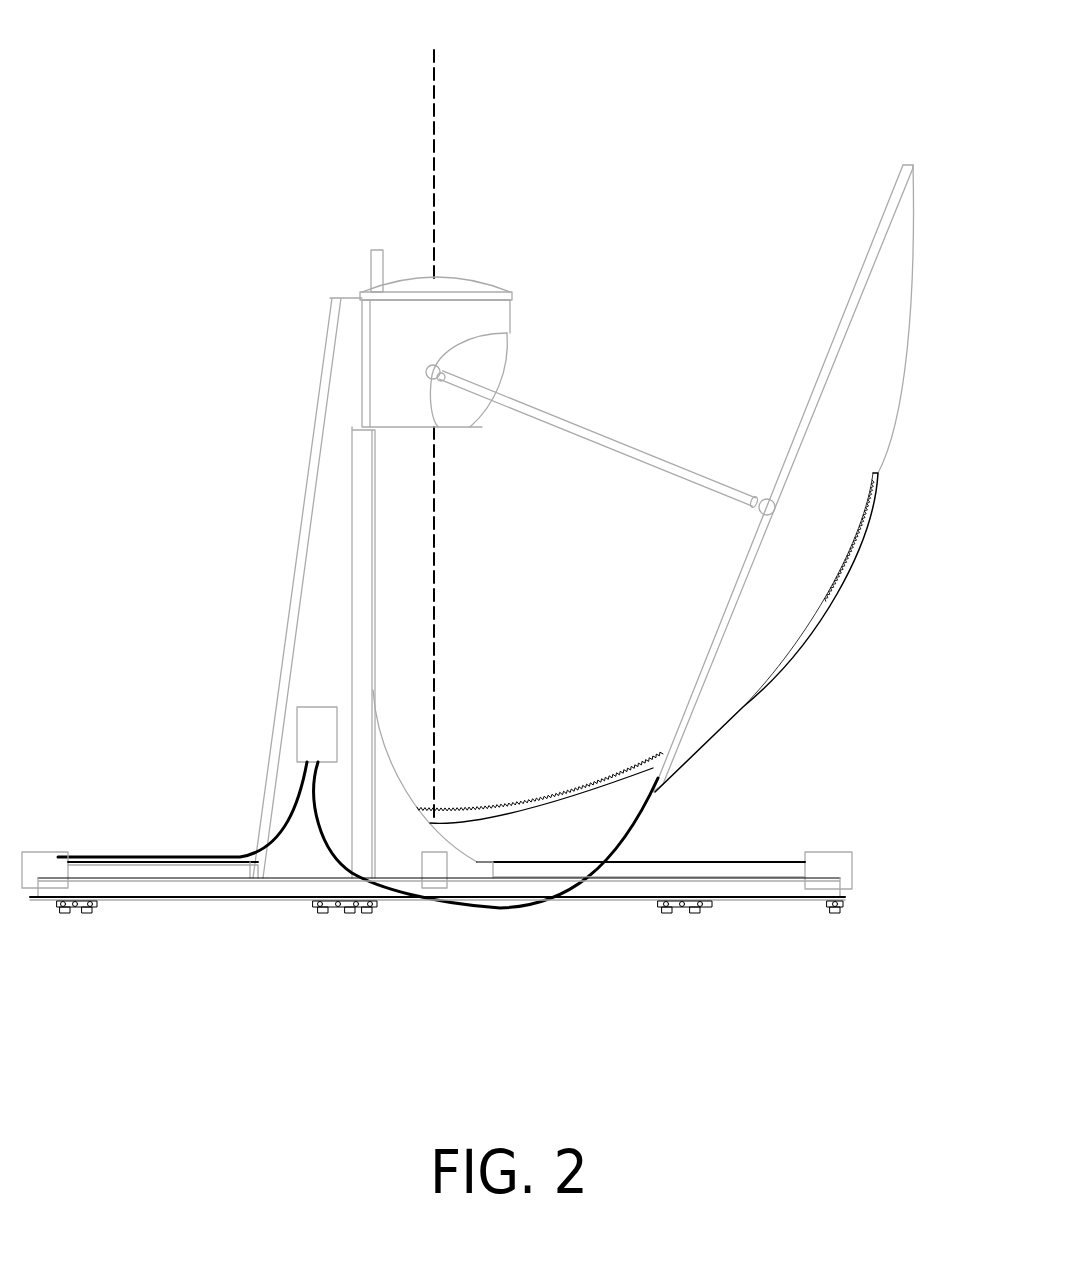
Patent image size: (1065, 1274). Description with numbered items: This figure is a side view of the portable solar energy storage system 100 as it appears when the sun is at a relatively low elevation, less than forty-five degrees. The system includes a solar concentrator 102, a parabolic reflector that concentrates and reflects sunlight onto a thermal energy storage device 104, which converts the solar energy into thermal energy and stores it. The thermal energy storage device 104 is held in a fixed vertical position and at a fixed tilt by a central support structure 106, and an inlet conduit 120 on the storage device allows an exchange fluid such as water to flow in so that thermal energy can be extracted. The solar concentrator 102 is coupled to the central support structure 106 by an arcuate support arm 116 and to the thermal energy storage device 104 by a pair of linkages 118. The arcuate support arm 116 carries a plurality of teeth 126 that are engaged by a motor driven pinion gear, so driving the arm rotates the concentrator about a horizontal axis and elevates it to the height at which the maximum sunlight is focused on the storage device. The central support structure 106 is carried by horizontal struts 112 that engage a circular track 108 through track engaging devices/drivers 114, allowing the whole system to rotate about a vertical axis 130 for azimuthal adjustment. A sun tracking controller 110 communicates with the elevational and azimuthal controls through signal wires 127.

The portable solar energy storage system 100 is at (143, 95).
The solar concentrator 102 is at (726, 712).
The thermal energy storage device 104 is at (484, 290).
The central support structure 106 is at (308, 583).
The circular track 108 is at (153, 885).
The sun tracking controller 110 is at (322, 728).
The horizontal struts 112 is at (145, 873).
The track engaging devices/drivers 114 is at (42, 862).
The arcuate support arm 116 is at (543, 804).
The linkages 118 is at (662, 462).
The inlet conduit 120 is at (371, 262).
The teeth 126 is at (610, 778).
The signal wires 127 is at (270, 813).
The vertical axis 130 is at (436, 103).